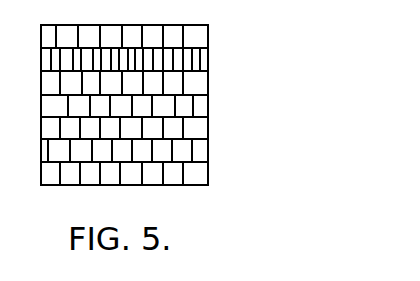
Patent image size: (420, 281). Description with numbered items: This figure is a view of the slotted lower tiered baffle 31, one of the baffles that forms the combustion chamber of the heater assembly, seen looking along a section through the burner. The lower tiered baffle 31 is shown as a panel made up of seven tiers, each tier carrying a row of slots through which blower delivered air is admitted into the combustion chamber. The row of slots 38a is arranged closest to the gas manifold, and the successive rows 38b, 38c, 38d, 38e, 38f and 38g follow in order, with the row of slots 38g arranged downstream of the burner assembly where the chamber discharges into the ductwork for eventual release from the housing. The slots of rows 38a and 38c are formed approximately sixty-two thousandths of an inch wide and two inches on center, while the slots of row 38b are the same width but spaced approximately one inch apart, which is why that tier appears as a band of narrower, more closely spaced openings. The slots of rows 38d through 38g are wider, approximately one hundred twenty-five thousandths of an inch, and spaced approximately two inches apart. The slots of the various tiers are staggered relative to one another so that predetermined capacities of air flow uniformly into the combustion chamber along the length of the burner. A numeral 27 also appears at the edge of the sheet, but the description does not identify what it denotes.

The lower tiered baffle 31 is at (211, 98).
The row of slots 38a is at (211, 30).
The row of slots 38b is at (212, 52).
The row of slots 38c is at (212, 76).
The row of slots 38d is at (210, 107).
The row of slots 38e is at (210, 130).
The row of slots 38f is at (210, 151).
The row of slots 38g is at (210, 170).
The adjacent component (partially shown) 27 is at (7, 148).